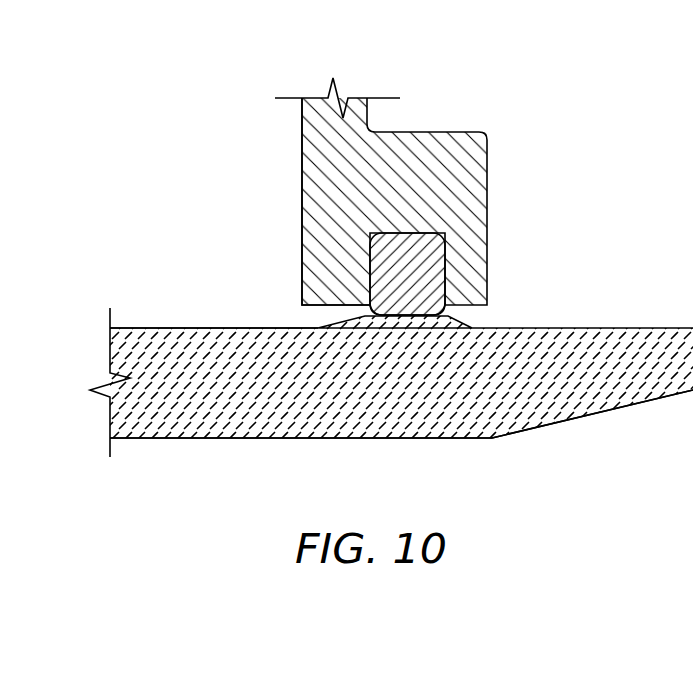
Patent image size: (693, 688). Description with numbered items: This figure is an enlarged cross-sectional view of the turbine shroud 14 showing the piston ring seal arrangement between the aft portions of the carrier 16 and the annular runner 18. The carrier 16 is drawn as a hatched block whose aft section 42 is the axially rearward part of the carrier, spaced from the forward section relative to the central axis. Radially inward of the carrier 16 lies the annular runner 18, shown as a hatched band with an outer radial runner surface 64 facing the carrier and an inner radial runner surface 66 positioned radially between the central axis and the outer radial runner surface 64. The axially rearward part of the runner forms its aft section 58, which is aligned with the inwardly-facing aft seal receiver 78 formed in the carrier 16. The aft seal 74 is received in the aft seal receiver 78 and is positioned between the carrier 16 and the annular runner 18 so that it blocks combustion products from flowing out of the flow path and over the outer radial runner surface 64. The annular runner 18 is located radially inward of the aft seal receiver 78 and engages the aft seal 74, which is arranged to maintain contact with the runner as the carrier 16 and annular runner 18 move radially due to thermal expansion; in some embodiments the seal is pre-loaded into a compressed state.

The turbine shroud 14 is at (510, 75).
The carrier 16 is at (288, 157).
The annular runner 18 is at (222, 463).
The aft section 42 is at (432, 108).
The aft section 58 is at (638, 318).
The outer radial runner surface 64 is at (172, 328).
The inner radial runner surface 66 is at (176, 440).
The aft seal 74 is at (428, 277).
The inwardly-facing aft seal receiver 78 is at (401, 285).